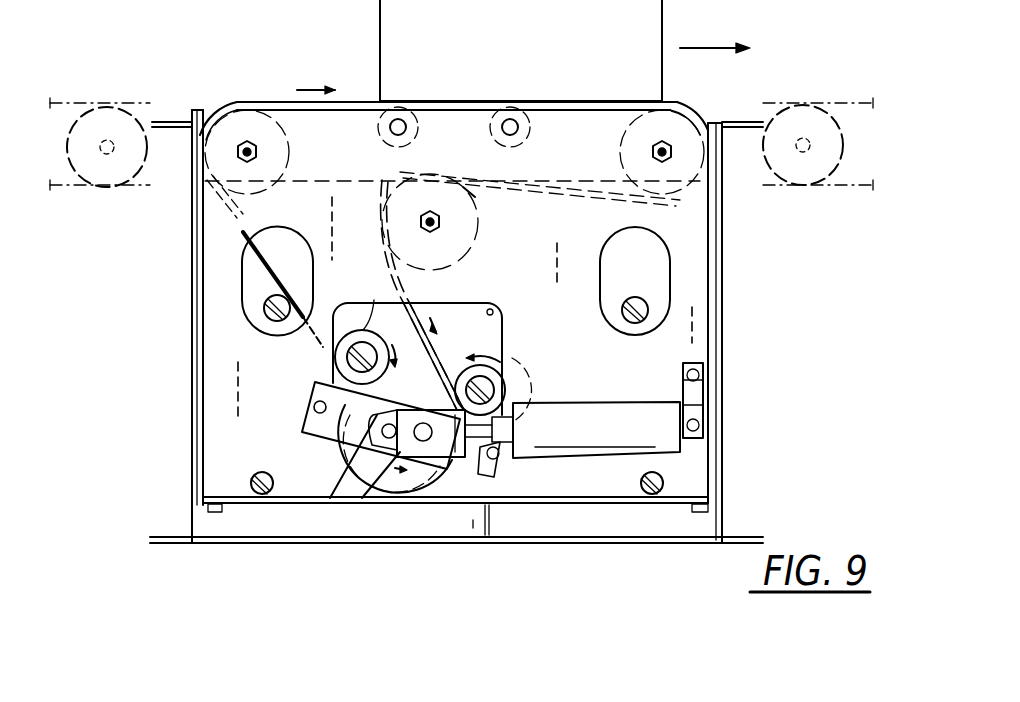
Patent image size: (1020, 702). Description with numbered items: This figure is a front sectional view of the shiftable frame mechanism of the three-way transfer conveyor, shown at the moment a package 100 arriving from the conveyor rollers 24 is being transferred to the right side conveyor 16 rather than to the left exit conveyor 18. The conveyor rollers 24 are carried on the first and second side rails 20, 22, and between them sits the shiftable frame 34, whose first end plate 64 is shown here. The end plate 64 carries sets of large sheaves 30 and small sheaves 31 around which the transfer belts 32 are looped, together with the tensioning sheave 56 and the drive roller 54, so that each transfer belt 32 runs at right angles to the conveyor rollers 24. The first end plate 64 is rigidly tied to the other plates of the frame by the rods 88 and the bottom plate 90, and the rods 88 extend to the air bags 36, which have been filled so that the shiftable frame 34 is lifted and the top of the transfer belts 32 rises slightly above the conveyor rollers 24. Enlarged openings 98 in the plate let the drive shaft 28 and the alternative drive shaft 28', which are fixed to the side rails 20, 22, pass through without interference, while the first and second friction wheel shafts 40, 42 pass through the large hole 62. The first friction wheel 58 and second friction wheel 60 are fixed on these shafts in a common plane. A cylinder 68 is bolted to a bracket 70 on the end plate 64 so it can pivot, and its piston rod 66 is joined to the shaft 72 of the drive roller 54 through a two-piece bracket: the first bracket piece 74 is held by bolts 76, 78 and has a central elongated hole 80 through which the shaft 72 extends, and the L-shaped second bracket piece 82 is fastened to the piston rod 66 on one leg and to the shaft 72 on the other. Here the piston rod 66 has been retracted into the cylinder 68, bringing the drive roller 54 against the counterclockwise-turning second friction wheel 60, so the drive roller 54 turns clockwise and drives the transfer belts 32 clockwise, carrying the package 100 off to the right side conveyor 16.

The right exit conveyor 16 is at (850, 103).
The left exit conveyor 18 is at (62, 103).
The first side rail 20 is at (723, 273).
The second side rail 22 is at (186, 294).
The conveyor roller 24 is at (318, 190).
The drive shaft 28 is at (698, 304).
The alternative drive shaft 28' is at (209, 283).
The large sheave 30 is at (290, 155).
The small sheave 31 is at (490, 140).
The transfer belt 32 is at (685, 92).
The shiftable frame 34 is at (232, 427).
The air bag 36 is at (495, 522).
The first friction wheel shaft 40 is at (350, 347).
The second friction wheel shaft 42 is at (503, 382).
The drive roller 54 is at (418, 468).
The tensioning sheave 56 is at (480, 228).
The first friction wheel 58 is at (370, 330).
The second friction wheel 60 is at (500, 345).
The hole 62 is at (492, 309).
The first end plate 64 is at (238, 385).
The piston rod 66 is at (481, 474).
The cylinder 68 is at (610, 410).
The bracket 70 is at (703, 365).
The shaft 72 is at (360, 533).
The first bracket piece 74 is at (308, 432).
The bolt 76 is at (312, 408).
The bolt 78 is at (503, 450).
The elongated hole 80 is at (388, 444).
The second bracket piece 82 is at (380, 441).
The rod 88 is at (250, 478).
The bottom plate 90 is at (208, 508).
The enlarged opening 98 is at (248, 304).
The package 100 is at (483, 44).